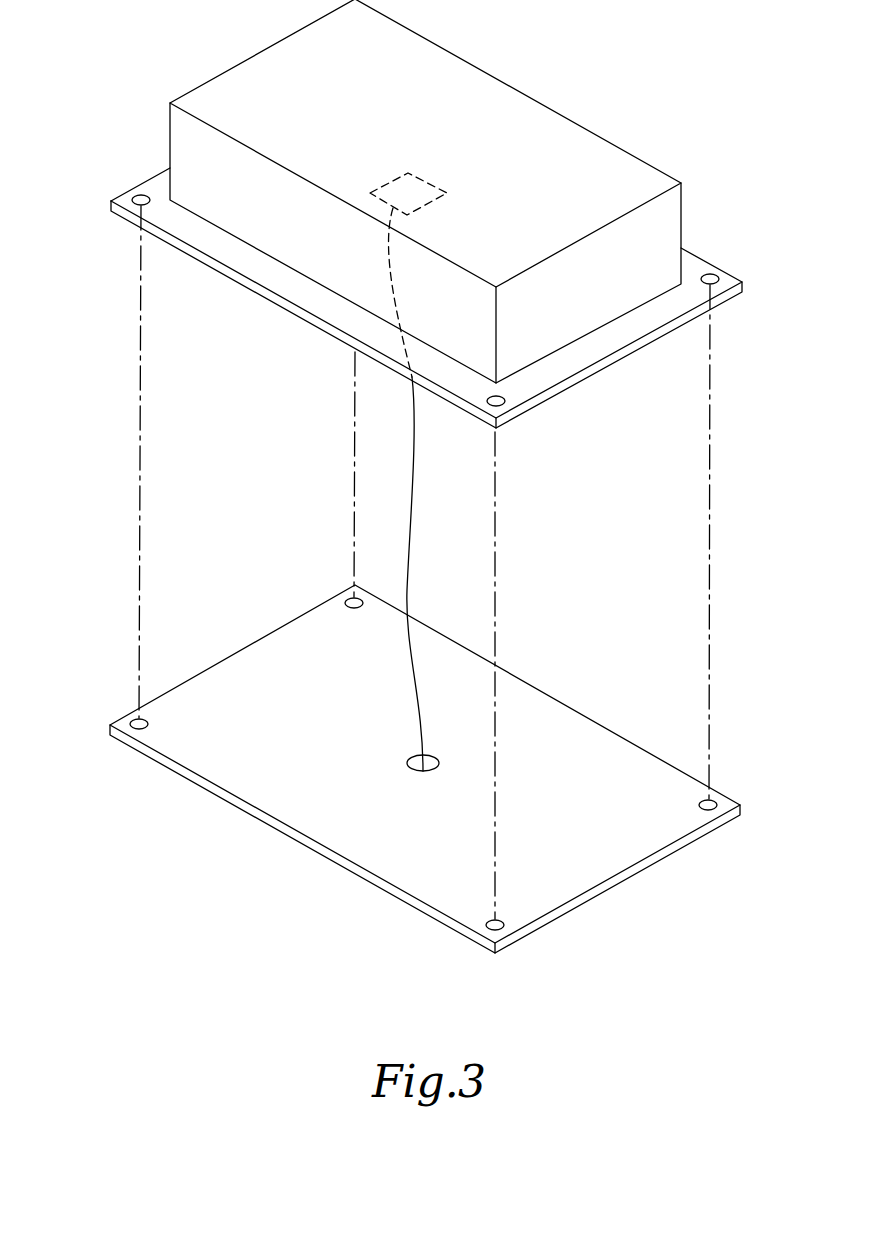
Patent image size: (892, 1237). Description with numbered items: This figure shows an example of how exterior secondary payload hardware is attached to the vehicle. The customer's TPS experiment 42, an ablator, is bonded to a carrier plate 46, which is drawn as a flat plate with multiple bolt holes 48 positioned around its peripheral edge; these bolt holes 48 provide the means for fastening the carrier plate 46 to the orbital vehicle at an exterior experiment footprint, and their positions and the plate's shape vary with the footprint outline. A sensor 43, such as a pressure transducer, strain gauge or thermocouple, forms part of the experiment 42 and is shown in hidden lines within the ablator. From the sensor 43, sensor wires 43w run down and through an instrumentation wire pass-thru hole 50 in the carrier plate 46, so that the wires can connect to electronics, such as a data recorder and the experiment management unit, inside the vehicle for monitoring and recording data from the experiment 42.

The TPS experiment 42 is at (452, 80).
The sensor 43 is at (433, 183).
The sensor wires 43w is at (410, 650).
The carrier plate 46 is at (697, 265).
The bolt holes 48 is at (140, 195).
The instrumentation wire pass-thru hole 50 is at (410, 759).